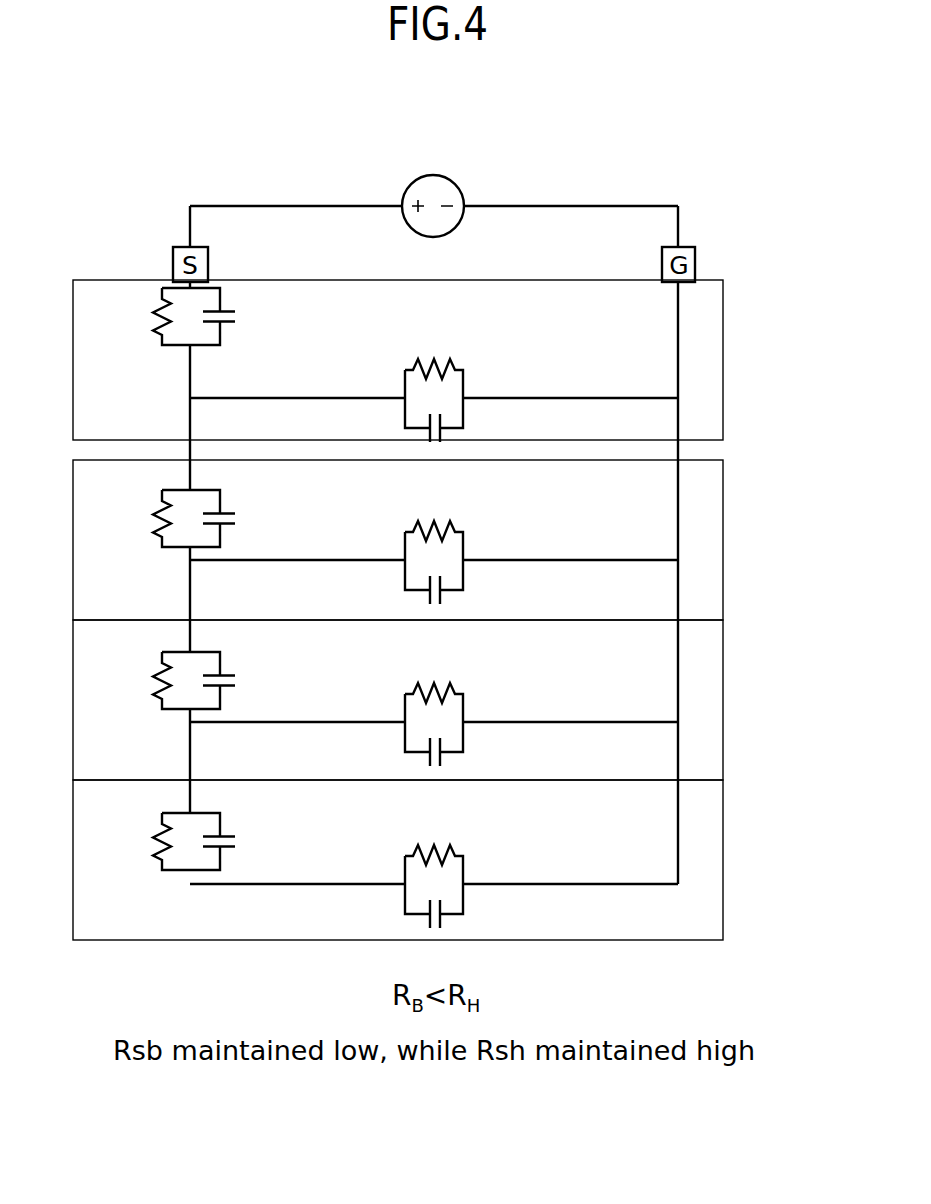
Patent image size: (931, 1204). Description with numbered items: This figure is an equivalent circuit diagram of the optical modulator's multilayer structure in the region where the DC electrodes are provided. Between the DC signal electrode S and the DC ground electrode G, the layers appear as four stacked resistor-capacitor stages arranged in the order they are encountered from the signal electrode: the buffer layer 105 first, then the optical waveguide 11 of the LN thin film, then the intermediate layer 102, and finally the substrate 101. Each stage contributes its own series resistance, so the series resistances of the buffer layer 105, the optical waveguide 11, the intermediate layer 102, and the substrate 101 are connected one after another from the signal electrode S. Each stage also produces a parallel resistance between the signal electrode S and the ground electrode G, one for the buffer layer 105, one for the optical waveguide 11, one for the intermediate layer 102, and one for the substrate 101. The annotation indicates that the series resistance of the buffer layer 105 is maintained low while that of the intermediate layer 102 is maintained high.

The buffer layer 105 is at (723, 382).
The optical waveguide 11 is at (723, 544).
The intermediate layer 102 is at (723, 706).
The substrate 101 is at (723, 868).